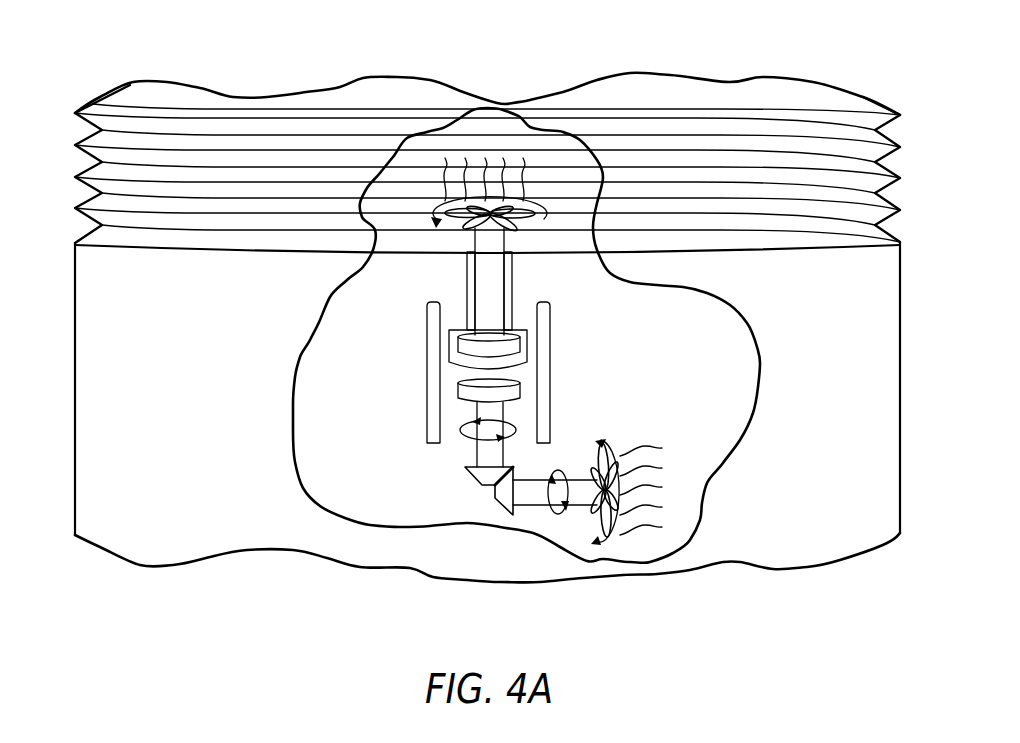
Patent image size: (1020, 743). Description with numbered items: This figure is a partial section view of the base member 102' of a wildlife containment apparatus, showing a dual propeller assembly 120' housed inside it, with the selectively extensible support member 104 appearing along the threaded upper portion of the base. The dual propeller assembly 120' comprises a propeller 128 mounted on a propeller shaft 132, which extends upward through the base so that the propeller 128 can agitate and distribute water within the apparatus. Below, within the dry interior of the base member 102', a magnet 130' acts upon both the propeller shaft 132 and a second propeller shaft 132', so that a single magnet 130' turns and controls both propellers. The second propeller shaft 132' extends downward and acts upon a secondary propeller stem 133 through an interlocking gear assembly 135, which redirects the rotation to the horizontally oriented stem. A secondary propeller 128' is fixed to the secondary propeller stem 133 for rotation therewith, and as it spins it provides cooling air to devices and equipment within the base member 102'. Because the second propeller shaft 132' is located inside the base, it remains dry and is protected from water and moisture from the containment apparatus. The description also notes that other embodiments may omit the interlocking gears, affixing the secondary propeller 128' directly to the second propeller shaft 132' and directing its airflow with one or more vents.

The selectively extensible support member 104 is at (74, 134).
The base member 102' is at (487, 302).
The dual propeller assembly 120' is at (526, 296).
The propeller 128 is at (489, 118).
The secondary propeller 128' is at (664, 468).
The magnet 130' is at (488, 372).
The propeller shaft 132 is at (447, 298).
The second propeller shaft 132' is at (439, 429).
The secondary propeller stem 133 is at (529, 498).
The interlocking gear assembly 135 is at (470, 503).